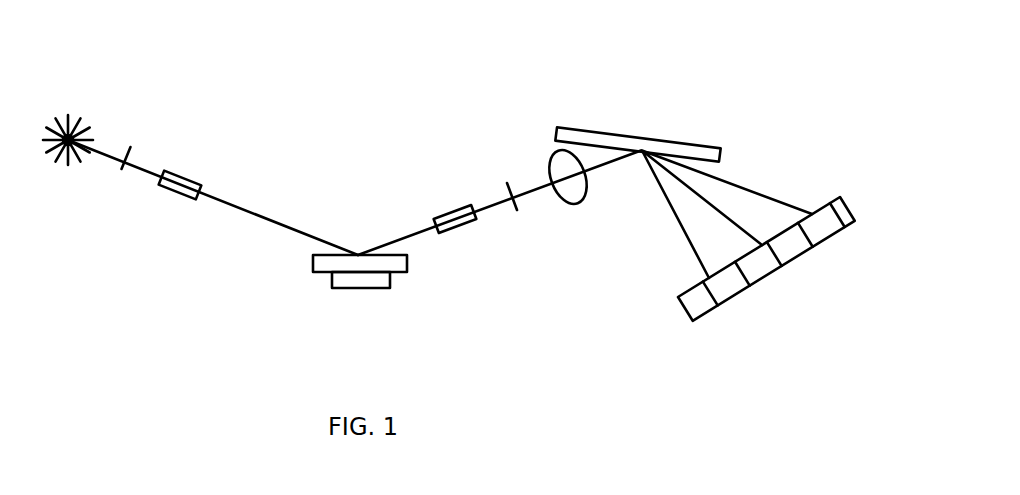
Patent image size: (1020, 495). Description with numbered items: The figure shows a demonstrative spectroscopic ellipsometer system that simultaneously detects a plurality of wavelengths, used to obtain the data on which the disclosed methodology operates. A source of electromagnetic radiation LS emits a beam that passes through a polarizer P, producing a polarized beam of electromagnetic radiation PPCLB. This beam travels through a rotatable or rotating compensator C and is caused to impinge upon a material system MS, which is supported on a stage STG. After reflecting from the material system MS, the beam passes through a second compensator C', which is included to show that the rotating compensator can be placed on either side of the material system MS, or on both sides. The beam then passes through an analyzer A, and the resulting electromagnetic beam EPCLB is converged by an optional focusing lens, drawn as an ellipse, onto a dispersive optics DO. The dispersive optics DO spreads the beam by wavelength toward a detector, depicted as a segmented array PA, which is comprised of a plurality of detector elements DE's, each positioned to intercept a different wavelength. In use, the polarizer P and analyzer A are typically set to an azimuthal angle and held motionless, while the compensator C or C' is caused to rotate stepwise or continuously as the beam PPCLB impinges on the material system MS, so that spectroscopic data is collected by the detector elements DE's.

The source of electromagnetic radiation LS is at (78, 108).
The polarized beam of electromagnetic radiation PPCLB is at (152, 154).
The polarizer P is at (119, 187).
The rotatable or rotating compensator C is at (141, 219).
The material system MS is at (305, 271).
The stage STG is at (351, 298).
The electromagnetic beam EPCLB is at (536, 177).
The compensator C' is at (409, 191).
The analyzer A is at (524, 220).
The dispersive optics DO is at (617, 125).
The photodetector array PA is at (685, 280).
The detector elements DE's is at (799, 276).